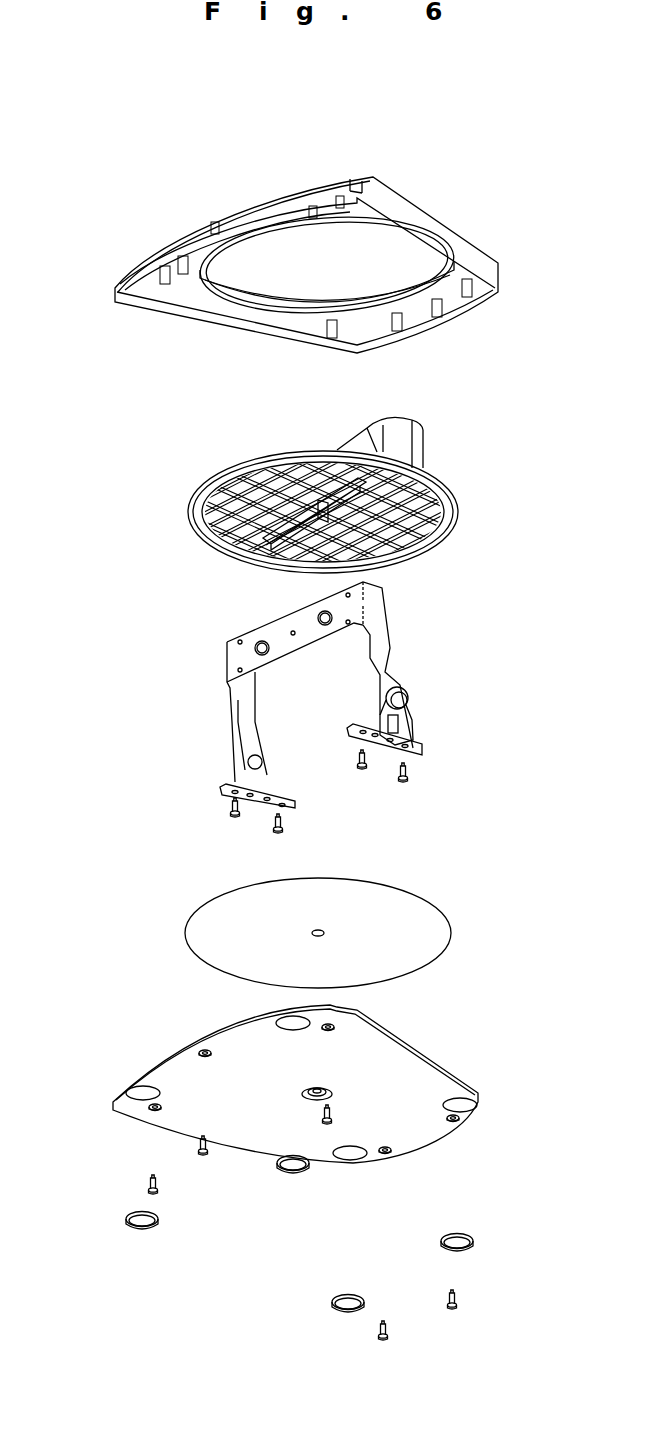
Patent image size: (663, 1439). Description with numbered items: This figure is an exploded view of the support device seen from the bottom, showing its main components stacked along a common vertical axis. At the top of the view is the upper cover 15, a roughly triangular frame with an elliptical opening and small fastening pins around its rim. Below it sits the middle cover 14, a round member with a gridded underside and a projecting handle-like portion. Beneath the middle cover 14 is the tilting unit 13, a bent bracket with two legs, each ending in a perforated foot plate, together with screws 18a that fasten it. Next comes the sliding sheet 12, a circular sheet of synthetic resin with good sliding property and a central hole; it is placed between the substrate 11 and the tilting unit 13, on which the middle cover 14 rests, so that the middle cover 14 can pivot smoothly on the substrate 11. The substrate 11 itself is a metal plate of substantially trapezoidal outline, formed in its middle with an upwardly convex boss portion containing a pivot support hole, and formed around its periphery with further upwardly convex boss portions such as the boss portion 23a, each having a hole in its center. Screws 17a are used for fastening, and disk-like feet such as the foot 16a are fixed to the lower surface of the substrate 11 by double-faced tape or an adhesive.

The substrate 11 is at (413, 1046).
The sliding sheet 12 is at (400, 890).
The tilting unit 13 is at (390, 645).
The middle cover 14 is at (437, 473).
The upper cover 15 is at (468, 243).
The foot 16a is at (140, 1230).
The screw 17a is at (146, 1188).
The screw 18a is at (362, 770).
The boss portion 23a is at (150, 1108).